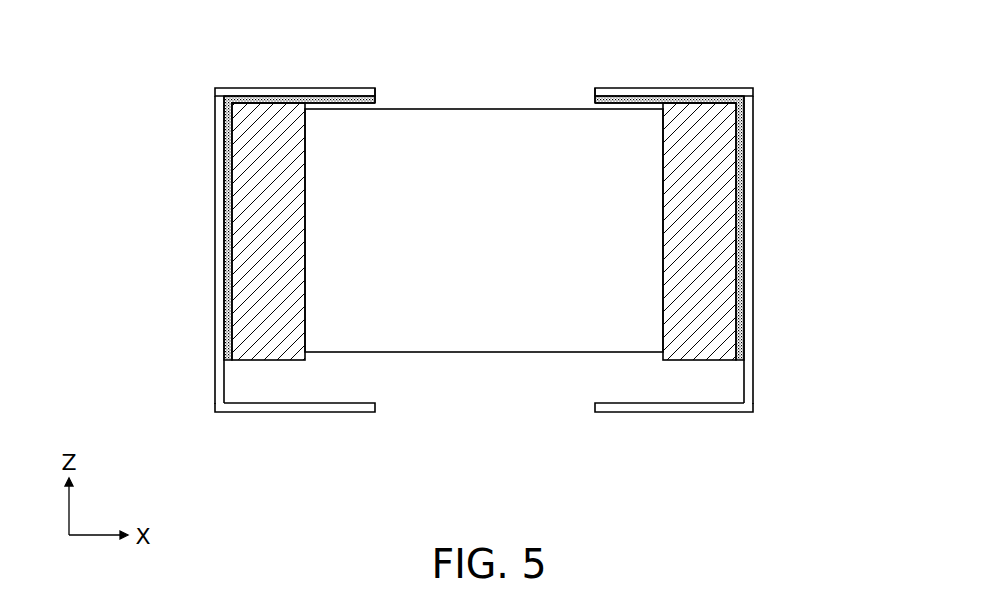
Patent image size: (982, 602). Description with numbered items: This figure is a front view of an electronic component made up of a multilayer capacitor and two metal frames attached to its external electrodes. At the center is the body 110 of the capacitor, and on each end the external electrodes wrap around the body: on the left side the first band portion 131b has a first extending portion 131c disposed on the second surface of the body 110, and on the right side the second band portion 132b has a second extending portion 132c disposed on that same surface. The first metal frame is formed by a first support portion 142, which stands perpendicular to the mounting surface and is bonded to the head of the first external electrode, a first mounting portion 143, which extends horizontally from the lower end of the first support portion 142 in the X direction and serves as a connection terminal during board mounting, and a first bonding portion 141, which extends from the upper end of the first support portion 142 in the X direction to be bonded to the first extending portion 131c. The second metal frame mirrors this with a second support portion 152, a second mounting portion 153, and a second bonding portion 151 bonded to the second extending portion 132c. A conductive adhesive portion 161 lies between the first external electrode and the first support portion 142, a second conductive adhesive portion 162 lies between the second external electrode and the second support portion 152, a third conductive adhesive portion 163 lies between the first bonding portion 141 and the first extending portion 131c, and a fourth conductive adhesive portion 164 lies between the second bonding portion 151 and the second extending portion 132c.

The body 110 is at (474, 123).
The first band portion 131b is at (272, 343).
The first extending portion 131c is at (337, 100).
The second band portion 132b is at (678, 343).
The second extending portion 132c is at (633, 100).
The first bonding portion 141 is at (275, 87).
The first support portion 142 is at (215, 216).
The first mounting portion 143 is at (250, 413).
The second bonding portion 151 is at (690, 88).
The second support portion 152 is at (753, 216).
The second mounting portion 153 is at (718, 413).
The conductive adhesive portion 161 is at (229, 262).
The second conductive adhesive portion 162 is at (740, 262).
The third conductive adhesive portion 163 is at (376, 98).
The fourth conductive adhesive portion 164 is at (595, 97).